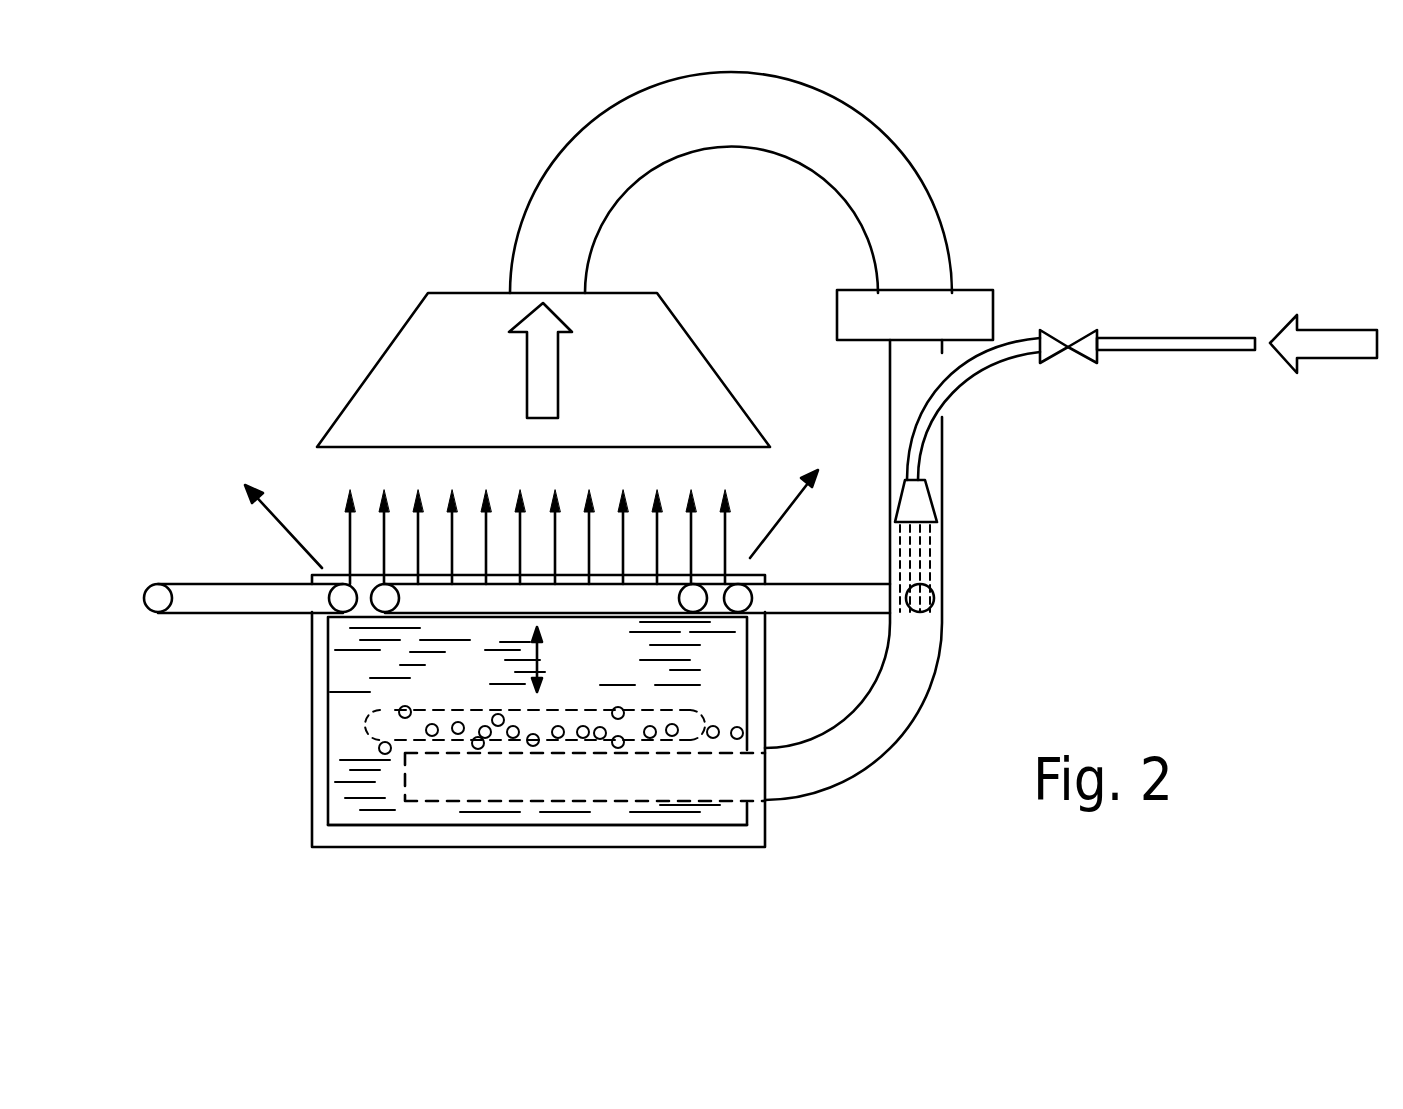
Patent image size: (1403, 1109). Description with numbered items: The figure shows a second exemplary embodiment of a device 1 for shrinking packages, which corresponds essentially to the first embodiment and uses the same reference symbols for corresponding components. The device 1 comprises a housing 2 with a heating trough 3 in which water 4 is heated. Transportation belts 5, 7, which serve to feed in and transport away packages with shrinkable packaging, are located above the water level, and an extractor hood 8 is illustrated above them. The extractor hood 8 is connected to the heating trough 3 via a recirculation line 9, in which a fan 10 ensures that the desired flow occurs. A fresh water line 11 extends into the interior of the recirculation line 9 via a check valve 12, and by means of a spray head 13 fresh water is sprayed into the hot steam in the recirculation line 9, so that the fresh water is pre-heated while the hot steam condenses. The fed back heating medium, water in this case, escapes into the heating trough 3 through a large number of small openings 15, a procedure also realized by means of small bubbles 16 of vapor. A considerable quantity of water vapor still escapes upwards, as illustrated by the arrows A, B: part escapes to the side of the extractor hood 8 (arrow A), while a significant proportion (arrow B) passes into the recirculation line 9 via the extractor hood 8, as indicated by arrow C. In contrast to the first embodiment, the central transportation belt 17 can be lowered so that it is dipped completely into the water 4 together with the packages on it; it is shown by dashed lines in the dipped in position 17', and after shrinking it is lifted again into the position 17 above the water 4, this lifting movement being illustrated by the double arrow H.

The device 1 is at (340, 343).
The housing 2 is at (765, 665).
The heating trough 3 is at (665, 825).
The water 4 is at (465, 674).
The transportation belt 5 is at (237, 584).
The transportation belt 7 is at (818, 584).
The extractor hood 8 is at (685, 372).
The recirculation line 9 is at (727, 118).
The fan 10 is at (960, 305).
The fresh water line 11 is at (1195, 350).
The check valve 12 is at (1050, 355).
The spray head 13 is at (922, 495).
The small openings 15 is at (600, 801).
The small bubbles of vapor 16 is at (736, 727).
The central transportation belt 17 is at (537, 516).
The dipped in position of transportation belt 17' is at (599, 671).
The arrow A is at (285, 520).
The arrow B is at (352, 528).
The arrow C is at (548, 360).
The double arrow H is at (547, 659).